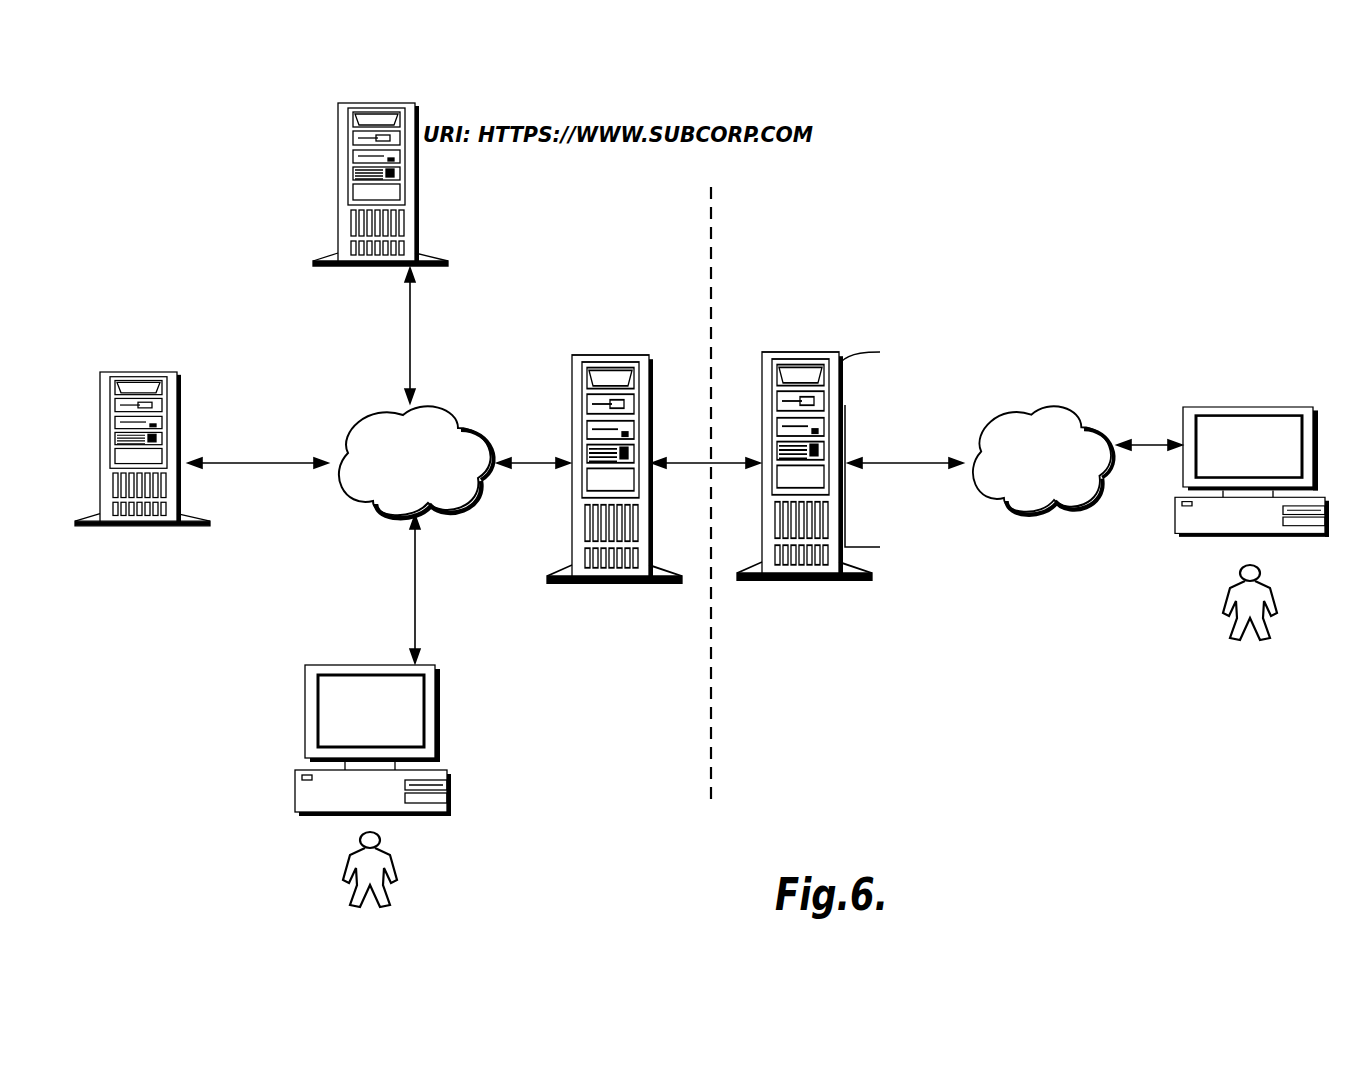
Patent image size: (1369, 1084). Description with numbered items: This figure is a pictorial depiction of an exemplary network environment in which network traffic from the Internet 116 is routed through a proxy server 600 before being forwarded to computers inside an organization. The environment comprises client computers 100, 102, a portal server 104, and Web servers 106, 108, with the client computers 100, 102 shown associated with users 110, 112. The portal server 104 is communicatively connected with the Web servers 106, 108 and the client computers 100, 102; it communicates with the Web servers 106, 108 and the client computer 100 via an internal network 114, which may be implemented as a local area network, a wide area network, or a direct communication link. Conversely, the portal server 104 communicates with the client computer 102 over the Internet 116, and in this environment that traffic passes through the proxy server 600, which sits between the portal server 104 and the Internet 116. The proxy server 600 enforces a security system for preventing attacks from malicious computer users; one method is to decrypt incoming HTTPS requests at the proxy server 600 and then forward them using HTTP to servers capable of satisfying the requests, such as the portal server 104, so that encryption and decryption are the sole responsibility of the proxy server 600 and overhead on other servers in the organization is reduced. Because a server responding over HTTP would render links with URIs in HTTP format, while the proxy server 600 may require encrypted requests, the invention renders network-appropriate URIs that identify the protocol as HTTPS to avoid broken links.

The client computer 100 is at (440, 718).
The client computer 102 is at (1316, 405).
The portal server 104 is at (617, 588).
The Web server 106 is at (171, 527).
The Web server 108 is at (338, 158).
The user 110 is at (393, 898).
The user 112 is at (1275, 612).
The internal network 114 is at (463, 405).
The Internet 116 is at (1068, 402).
The proxy server 600 is at (841, 362).